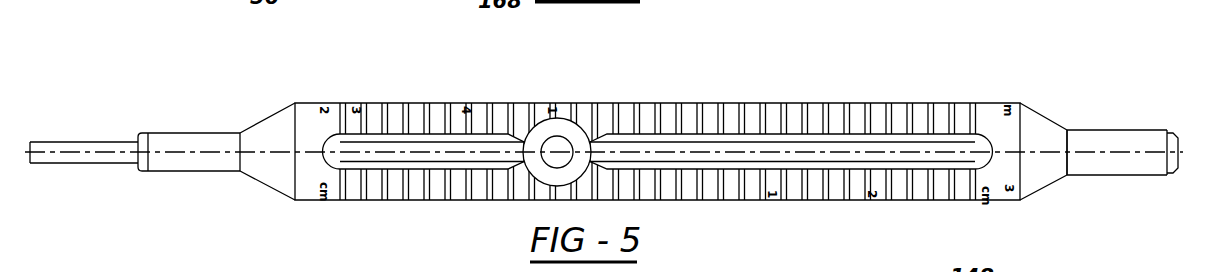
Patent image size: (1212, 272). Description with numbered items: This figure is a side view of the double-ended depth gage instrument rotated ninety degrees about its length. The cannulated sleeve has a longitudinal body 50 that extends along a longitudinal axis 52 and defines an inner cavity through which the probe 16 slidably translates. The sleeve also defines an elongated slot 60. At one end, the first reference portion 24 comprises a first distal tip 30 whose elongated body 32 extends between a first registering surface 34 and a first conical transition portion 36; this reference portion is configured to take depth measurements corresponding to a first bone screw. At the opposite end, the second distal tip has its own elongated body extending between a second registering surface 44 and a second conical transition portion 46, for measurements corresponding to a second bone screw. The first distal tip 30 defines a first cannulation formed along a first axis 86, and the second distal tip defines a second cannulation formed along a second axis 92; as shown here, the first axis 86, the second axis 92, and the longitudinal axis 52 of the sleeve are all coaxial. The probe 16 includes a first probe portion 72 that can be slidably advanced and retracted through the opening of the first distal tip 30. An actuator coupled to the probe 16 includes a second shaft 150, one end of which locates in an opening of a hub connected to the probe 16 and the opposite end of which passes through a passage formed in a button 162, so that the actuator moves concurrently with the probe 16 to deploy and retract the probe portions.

The probe 16 is at (748, 147).
The first reference portion 24 is at (218, 100).
The first distal tip 30 is at (173, 140).
The elongated body 32 is at (1110, 132).
The first registering surface 34 is at (143, 171).
The first conical transition portion 36 is at (265, 172).
The second registering surface 44 is at (1175, 175).
The second conical transition portion 46 is at (1032, 125).
The longitudinal body 50 is at (418, 195).
The longitudinal axis 52 is at (877, 150).
The elongated slot 60 is at (425, 146).
The first probe portion 72 is at (50, 142).
The first axis 86 is at (200, 150).
The second axis 92 is at (1135, 85).
The second shaft 150 is at (557, 145).
The button 162 is at (578, 130).